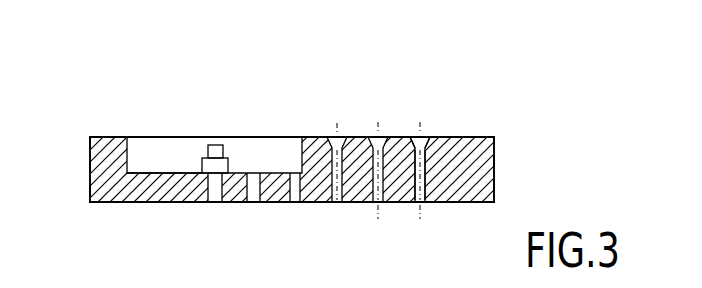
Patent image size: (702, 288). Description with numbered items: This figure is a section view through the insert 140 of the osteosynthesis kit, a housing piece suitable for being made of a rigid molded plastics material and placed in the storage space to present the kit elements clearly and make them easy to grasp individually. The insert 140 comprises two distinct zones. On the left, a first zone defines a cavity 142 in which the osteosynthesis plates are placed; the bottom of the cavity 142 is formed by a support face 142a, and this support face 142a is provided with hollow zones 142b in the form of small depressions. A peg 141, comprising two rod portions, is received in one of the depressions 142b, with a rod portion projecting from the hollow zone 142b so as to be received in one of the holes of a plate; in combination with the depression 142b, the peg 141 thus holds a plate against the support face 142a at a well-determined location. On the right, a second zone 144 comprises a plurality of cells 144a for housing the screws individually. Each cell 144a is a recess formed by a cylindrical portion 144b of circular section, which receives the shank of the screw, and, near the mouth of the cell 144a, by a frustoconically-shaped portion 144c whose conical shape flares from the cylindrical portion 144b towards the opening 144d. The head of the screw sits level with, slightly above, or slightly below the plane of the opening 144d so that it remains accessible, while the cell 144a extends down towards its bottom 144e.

The insert 140 is at (95, 172).
The peg 141 is at (216, 146).
The cavity 142 is at (287, 150).
The support face 142a is at (175, 165).
The hollow zone 142b is at (257, 174).
The second zone 144 is at (375, 80).
The cell 144a is at (433, 131).
The cylindrical portion 144b is at (414, 172).
The frustoconically-shaped portion 144c is at (414, 137).
The opening 144d is at (427, 143).
The bottom 144e is at (422, 203).